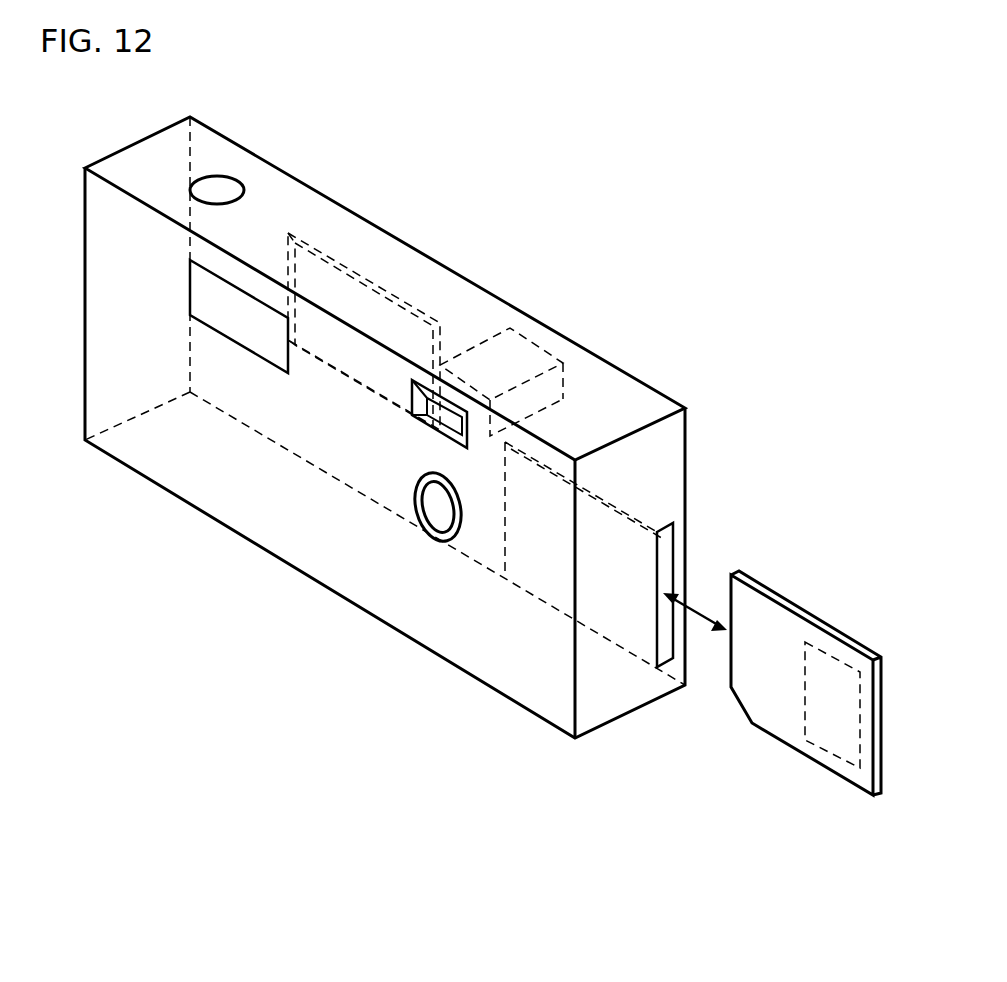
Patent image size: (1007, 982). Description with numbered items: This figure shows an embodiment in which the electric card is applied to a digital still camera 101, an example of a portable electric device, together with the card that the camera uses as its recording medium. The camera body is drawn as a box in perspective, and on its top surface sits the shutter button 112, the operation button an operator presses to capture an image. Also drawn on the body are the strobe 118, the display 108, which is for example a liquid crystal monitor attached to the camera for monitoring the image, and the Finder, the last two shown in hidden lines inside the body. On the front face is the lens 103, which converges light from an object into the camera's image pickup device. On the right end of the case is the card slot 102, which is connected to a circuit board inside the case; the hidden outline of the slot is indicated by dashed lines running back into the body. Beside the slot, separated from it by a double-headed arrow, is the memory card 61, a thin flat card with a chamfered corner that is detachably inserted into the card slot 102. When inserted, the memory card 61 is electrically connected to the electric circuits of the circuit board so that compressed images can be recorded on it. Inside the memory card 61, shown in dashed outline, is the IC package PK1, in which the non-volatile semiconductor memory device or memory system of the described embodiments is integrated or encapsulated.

The digital still camera 101 is at (325, 220).
The shutter button 112 is at (220, 187).
The strobe 118 is at (257, 333).
The display 108 is at (395, 297).
The finder Finder is at (522, 350).
The lens 103 is at (442, 507).
The card slot 102 is at (666, 555).
The memory card 61 is at (770, 710).
The IC package PK1 is at (833, 757).